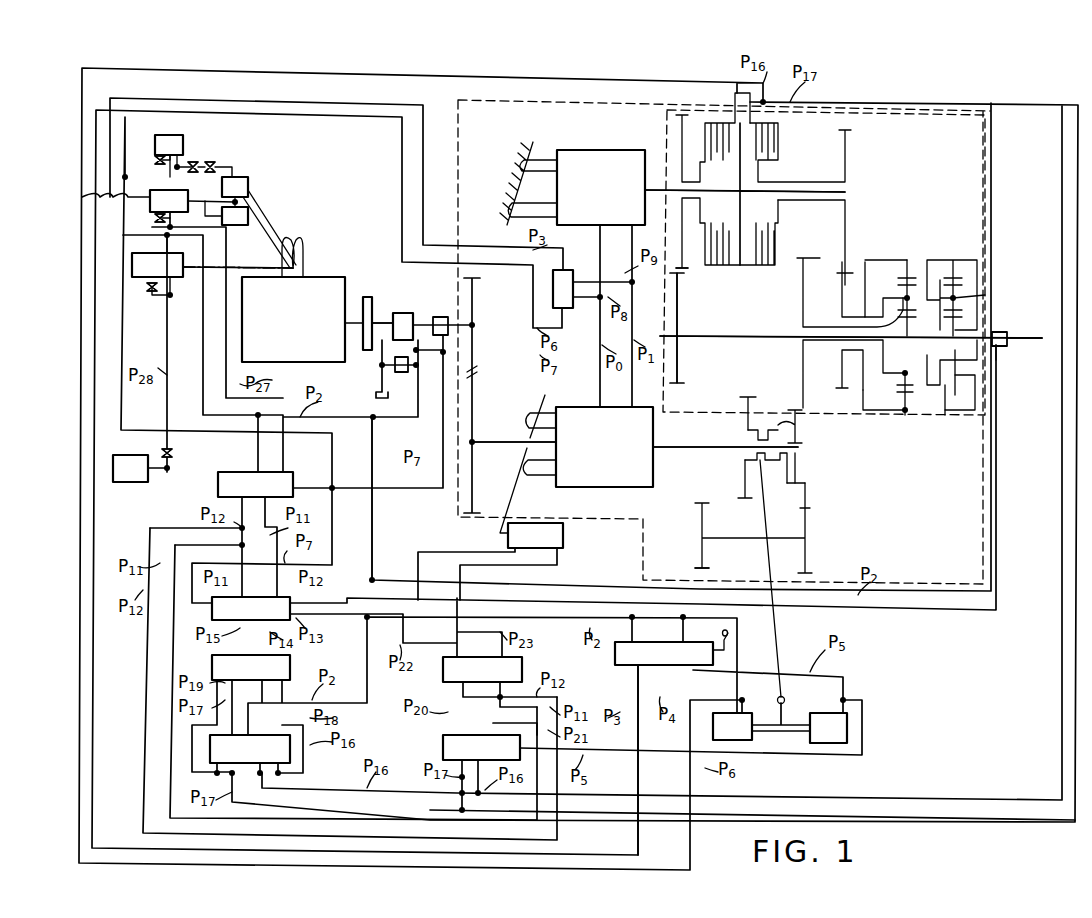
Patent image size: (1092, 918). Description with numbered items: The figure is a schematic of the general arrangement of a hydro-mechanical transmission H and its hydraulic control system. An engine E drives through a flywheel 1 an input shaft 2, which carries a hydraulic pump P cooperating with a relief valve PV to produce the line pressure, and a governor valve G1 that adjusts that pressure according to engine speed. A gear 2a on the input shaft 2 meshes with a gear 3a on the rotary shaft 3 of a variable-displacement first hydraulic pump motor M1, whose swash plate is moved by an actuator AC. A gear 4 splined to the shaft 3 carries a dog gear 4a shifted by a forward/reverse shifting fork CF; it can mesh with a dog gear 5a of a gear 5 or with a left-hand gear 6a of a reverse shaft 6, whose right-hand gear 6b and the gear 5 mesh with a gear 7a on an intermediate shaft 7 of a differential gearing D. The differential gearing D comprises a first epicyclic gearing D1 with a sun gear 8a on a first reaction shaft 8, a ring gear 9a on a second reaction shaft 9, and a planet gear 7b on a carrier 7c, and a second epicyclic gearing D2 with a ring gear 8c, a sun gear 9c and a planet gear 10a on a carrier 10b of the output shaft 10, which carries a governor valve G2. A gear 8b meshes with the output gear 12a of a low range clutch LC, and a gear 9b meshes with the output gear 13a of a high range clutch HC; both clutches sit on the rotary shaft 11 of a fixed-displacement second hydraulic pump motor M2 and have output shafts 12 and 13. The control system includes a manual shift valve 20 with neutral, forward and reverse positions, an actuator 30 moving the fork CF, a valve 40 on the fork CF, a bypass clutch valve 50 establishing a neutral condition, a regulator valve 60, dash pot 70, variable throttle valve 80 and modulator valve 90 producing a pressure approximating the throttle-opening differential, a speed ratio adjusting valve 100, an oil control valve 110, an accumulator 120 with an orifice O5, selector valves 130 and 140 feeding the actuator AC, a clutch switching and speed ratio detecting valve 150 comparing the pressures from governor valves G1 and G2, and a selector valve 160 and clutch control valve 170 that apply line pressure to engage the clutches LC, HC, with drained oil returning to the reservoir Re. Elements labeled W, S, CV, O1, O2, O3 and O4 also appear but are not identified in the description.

The flywheel 1 is at (367, 297).
The input shaft 2 is at (385, 323).
The gear 2a is at (472, 370).
The rotary shaft 3 is at (496, 442).
The gear 3a is at (472, 380).
The gear 4 is at (745, 498).
The dog gear 4a is at (785, 437).
The gear 5 is at (805, 483).
The dog gear 5a is at (787, 480).
The reverse shaft 6 is at (730, 538).
The left-hand gear 6a is at (698, 566).
The right-hand gear 6b is at (806, 508).
The intermediate shaft 7 is at (822, 340).
The gear 7a is at (760, 395).
The planet gear 7b is at (898, 385).
The carrier 7c is at (892, 295).
The first reaction shaft 8 is at (760, 336).
The sun gear 8a is at (803, 327).
The gear 8b is at (680, 280).
The ring gear 8c is at (950, 413).
The second reaction shaft 9 is at (850, 350).
The ring gear 9a is at (906, 413).
The gear 9b is at (838, 285).
The sun gear 9c is at (960, 355).
The output shaft 10 is at (1030, 340).
The planet gear 10a is at (960, 295).
The carrier 10b is at (963, 382).
The rotary shaft 11 is at (845, 192).
The output shaft 12 is at (688, 205).
The output gear 12a is at (690, 270).
The output shaft 13 is at (808, 200).
The output gear 13a is at (840, 270).
The manual shift valve 20 is at (671, 647).
The actuator 30 is at (828, 728).
The valve 40 is at (752, 735).
The bypass clutch valve 50 is at (563, 270).
The regulator valve 60 is at (170, 135).
The dash pot 70 is at (248, 185).
The variable throttle valve 80 is at (219, 216).
The modulator valve 90 is at (169, 201).
The speed ratio adjusting valve 100 is at (157, 256).
The oil control valve 110 is at (255, 484).
The accumulator 120 is at (130, 468).
The selector valve 130 is at (481, 747).
The selector valve 140 is at (482, 669).
The clutch switching and speed ratio detecting valve 150 is at (251, 608).
The selector valve 160 is at (251, 667).
The clutch control valve 170 is at (250, 749).
The engine E is at (293, 319).
The first hydraulic pump motor M1 is at (588, 447).
The second hydraulic pump motor M2 is at (572, 183).
The hydraulic pump P is at (403, 326).
The relief valve PV is at (401, 372).
The governor valve G1 is at (441, 317).
The governor valve G2 is at (1001, 332).
The actuator AC is at (535, 535).
The forward/reverse shifting fork CF is at (786, 582).
The reservoir Re is at (357, 488).
The sensor W is at (240, 267).
The sensor S is at (297, 262).
The check valve CV is at (212, 162).
The hydro-mechanical transmission H is at (463, 153).
The high range clutch HC is at (774, 145).
The low range clutch LC is at (727, 160).
The differential gearing D is at (880, 418).
The first epicyclic gearing D1 is at (907, 260).
The second epicyclic gearing D2 is at (953, 260).
The orifice O1 is at (155, 160).
The orifice O2 is at (193, 162).
The orifice O3 is at (155, 218).
The orifice O4 is at (152, 291).
The orifice O5 is at (173, 453).